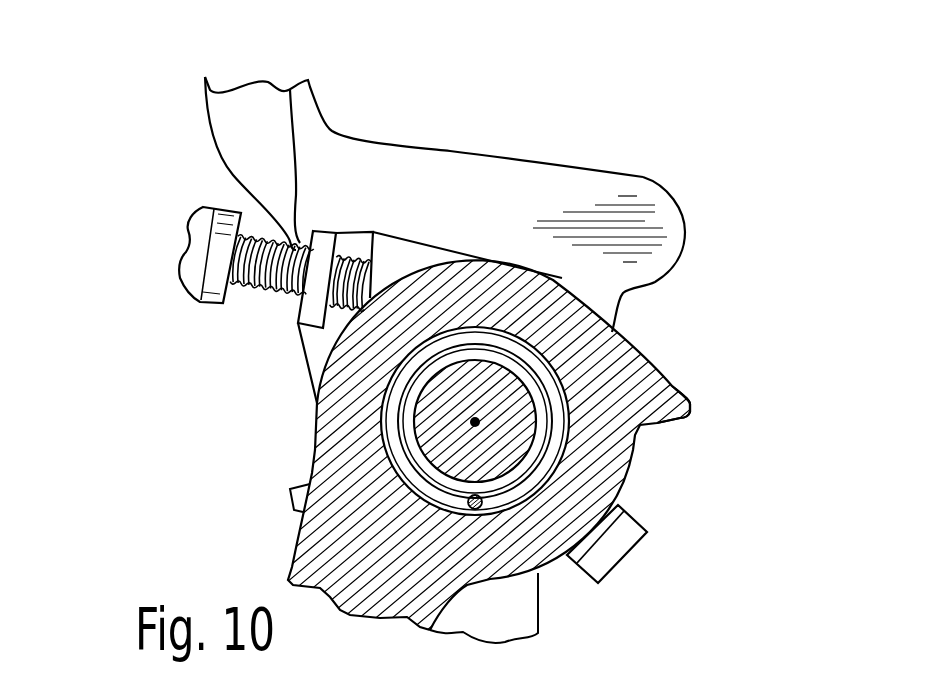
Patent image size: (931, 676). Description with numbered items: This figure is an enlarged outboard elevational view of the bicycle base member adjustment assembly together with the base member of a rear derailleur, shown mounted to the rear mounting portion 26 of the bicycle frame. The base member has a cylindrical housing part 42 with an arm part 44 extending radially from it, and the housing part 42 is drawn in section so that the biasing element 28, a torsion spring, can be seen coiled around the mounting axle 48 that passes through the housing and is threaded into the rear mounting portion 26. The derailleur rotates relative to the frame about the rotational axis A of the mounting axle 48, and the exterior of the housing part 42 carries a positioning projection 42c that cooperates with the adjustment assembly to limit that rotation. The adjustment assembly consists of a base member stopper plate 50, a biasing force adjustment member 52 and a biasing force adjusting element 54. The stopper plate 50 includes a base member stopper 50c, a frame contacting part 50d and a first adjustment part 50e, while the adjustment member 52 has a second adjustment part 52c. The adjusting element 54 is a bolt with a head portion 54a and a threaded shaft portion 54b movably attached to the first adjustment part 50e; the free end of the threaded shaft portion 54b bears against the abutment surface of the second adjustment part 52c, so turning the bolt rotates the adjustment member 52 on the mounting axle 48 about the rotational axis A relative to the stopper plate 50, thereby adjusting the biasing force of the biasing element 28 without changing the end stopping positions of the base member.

The rear mounting portion 26 is at (222, 117).
The biasing element 28 is at (370, 424).
The cylindrical housing part 42 is at (559, 276).
The positioning projection 42c is at (690, 398).
The arm part 44 is at (284, 533).
The mounting axle 48 is at (552, 405).
The base member stopper plate 50 is at (353, 221).
The base member stopper 50c is at (641, 520).
The frame contacting part 50d is at (300, 486).
The first adjustment part 50e is at (290, 89).
The biasing force adjustment member 52 is at (412, 228).
The second adjustment part 52c is at (371, 251).
The biasing force adjusting element 54 is at (178, 294).
The head portion 54a is at (200, 300).
The threaded shaft portion 54b is at (258, 295).
The rotational axis A is at (480, 422).